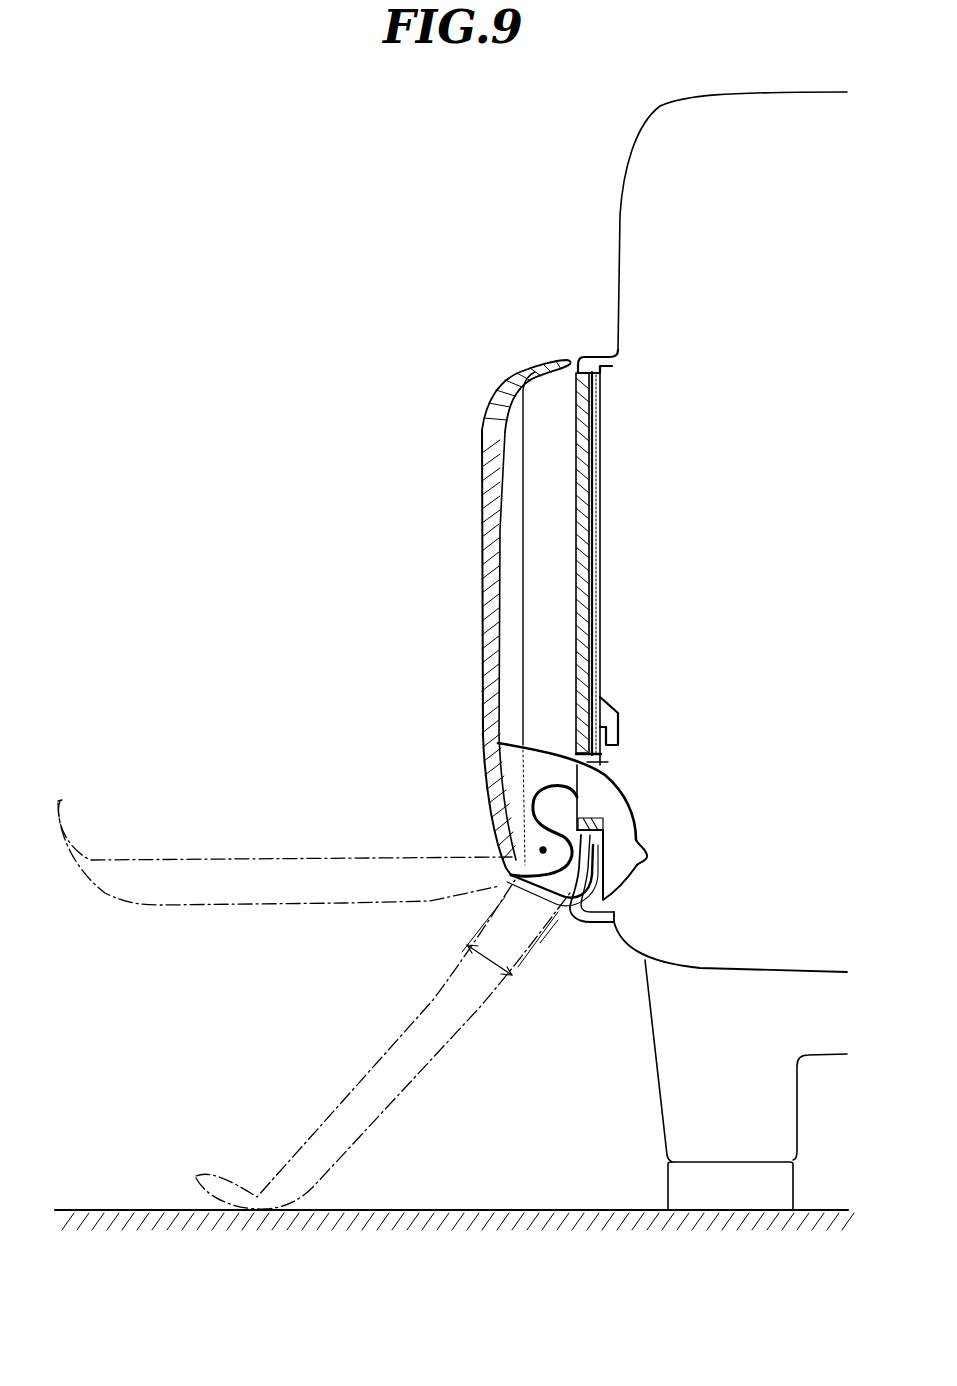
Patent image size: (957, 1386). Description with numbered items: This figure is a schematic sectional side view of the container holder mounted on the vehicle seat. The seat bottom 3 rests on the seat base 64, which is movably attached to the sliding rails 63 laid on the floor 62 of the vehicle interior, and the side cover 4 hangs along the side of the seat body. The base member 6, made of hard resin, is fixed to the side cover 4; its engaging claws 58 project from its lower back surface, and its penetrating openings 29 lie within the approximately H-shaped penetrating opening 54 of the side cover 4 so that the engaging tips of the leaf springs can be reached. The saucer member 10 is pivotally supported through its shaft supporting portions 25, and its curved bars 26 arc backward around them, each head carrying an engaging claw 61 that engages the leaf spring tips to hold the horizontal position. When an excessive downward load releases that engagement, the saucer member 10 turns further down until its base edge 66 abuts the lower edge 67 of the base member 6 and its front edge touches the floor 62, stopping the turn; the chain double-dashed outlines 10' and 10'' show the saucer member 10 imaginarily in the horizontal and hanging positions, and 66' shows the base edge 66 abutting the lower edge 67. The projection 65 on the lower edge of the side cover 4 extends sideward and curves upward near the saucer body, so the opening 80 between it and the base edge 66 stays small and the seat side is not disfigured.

The seat bottom 3 is at (621, 226).
The side cover 4 is at (603, 430).
The base member 6 is at (588, 546).
The saucer member 10 is at (526, 593).
The saucer member in horizontal position 10' is at (285, 851).
The saucer member in hanging position 10'' is at (383, 1044).
The shaft supporting portions 25 is at (532, 845).
The curved bars 26 is at (557, 760).
The penetrating openings 29 is at (602, 756).
The penetrating opening 54 is at (604, 763).
The engaging claws 58 is at (620, 716).
The engaging claw 61 is at (646, 853).
The floor 62 is at (507, 1214).
The sliding rails 63 is at (672, 1190).
The seat base 64 is at (668, 1063).
The projection 65 is at (586, 924).
The base edge 66 is at (516, 906).
The base edge abutting lower edge 66' is at (626, 888).
The lower edge 67 is at (606, 832).
The opening 80 is at (504, 986).